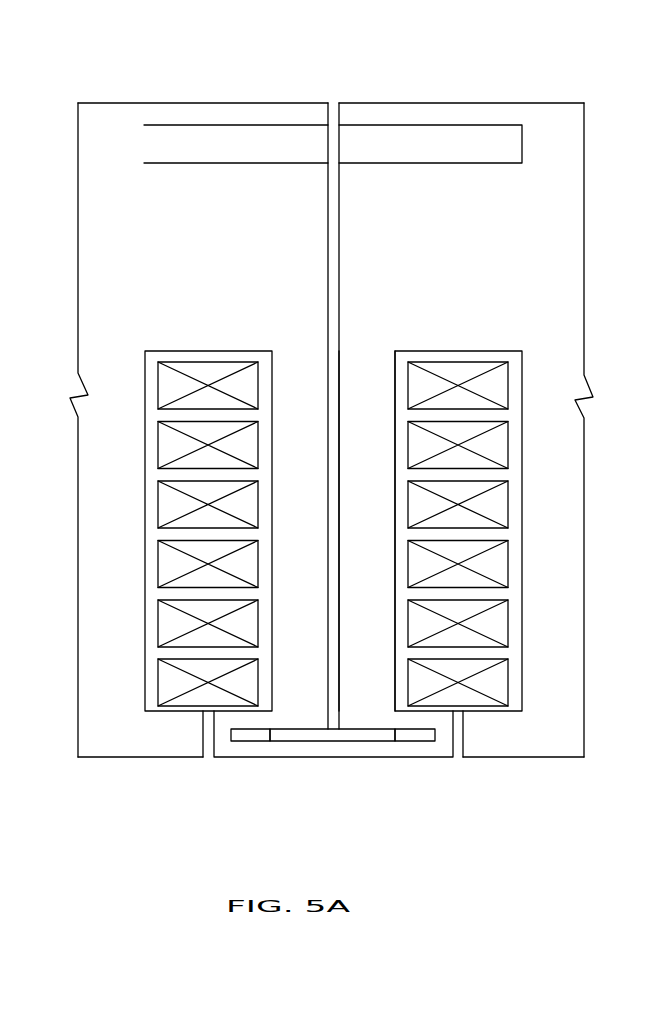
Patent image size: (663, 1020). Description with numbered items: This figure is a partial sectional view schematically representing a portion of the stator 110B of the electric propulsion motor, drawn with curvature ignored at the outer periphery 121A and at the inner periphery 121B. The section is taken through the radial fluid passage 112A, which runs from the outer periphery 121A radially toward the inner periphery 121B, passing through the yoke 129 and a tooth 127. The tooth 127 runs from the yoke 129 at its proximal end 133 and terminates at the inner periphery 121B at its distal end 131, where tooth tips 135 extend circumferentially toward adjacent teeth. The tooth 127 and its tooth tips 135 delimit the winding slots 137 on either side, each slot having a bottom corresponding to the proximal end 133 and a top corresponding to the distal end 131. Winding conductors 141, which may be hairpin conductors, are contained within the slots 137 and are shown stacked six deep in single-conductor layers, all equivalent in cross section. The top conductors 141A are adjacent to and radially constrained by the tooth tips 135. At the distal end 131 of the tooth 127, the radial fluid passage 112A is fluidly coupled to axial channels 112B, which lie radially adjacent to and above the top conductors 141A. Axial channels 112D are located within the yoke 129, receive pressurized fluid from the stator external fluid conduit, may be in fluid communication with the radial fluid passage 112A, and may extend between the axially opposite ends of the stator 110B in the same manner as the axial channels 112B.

The stator 110B is at (238, 51).
The outer periphery 121A is at (290, 103).
The inner periphery 121B is at (523, 757).
The yoke 129 is at (584, 188).
The tooth tips 135 is at (433, 757).
The axial channels 112D is at (381, 125).
The radial fluid passage 112A is at (339, 219).
The axial channels 112B is at (253, 736).
The distal end 131 is at (340, 786).
The proximal end 133 is at (302, 355).
The winding slots 137 is at (514, 423).
The tooth 127 is at (365, 438).
The winding conductors 141 is at (538, 524).
The top conductors 141A is at (508, 681).